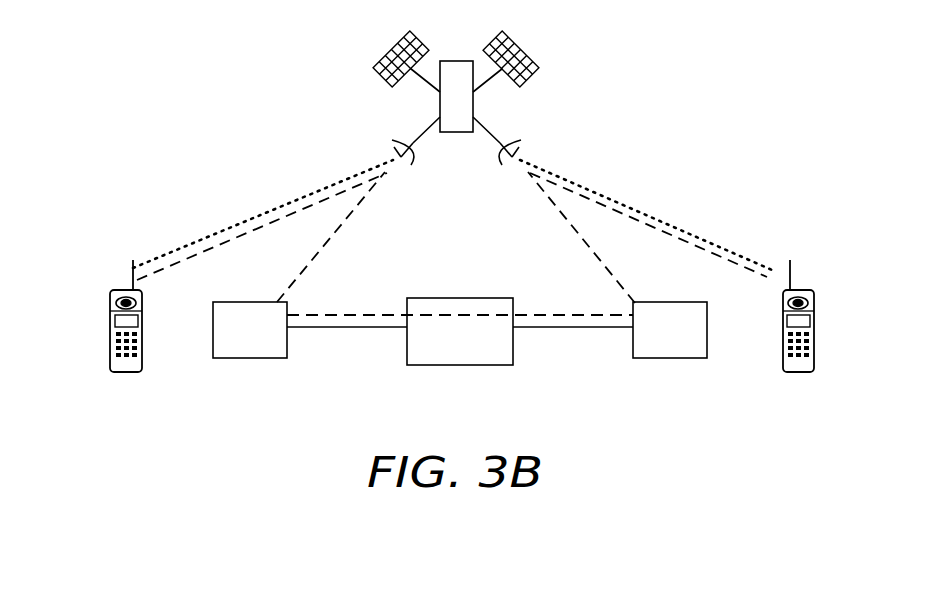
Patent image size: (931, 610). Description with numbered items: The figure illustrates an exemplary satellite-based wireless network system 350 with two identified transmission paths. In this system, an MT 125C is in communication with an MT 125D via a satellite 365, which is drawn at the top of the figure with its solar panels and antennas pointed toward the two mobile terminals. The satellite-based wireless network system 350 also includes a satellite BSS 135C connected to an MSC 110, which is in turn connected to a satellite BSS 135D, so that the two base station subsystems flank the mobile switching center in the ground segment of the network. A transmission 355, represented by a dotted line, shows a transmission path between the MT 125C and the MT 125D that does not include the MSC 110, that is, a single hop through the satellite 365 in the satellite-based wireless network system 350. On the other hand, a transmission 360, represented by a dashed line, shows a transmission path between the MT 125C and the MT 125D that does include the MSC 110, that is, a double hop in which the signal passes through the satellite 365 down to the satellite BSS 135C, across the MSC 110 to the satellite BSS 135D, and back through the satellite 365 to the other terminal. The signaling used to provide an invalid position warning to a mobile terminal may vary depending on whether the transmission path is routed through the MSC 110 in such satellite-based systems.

The satellite-based wireless network system 350 is at (122, 122).
The satellite 365 is at (525, 53).
The transmission 355 is at (268, 218).
The transmission 360 is at (227, 243).
The MSC 110 is at (477, 298).
The satellite BSS 135C is at (253, 358).
The satellite BSS 135D is at (670, 358).
The MT 125C is at (110, 328).
The MT 125D is at (815, 332).